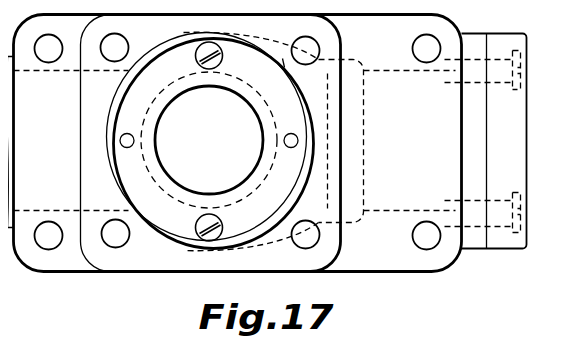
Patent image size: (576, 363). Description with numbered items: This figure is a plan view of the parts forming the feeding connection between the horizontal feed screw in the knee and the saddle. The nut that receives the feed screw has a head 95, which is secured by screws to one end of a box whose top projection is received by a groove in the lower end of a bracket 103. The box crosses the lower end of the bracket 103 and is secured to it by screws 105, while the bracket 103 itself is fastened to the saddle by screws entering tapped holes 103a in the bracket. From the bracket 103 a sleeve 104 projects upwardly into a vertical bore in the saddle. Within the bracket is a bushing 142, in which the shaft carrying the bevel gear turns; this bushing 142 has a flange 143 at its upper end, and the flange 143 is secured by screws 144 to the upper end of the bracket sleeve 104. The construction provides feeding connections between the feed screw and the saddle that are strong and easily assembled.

The head 95 is at (502, 249).
The bracket 103 is at (468, 125).
The tapped holes 103a is at (120, 36).
The sleeve 104 is at (316, 137).
The screws 105 is at (50, 62).
The bushing 142 is at (263, 138).
The flange 143 is at (147, 138).
The screws 144 is at (208, 68).